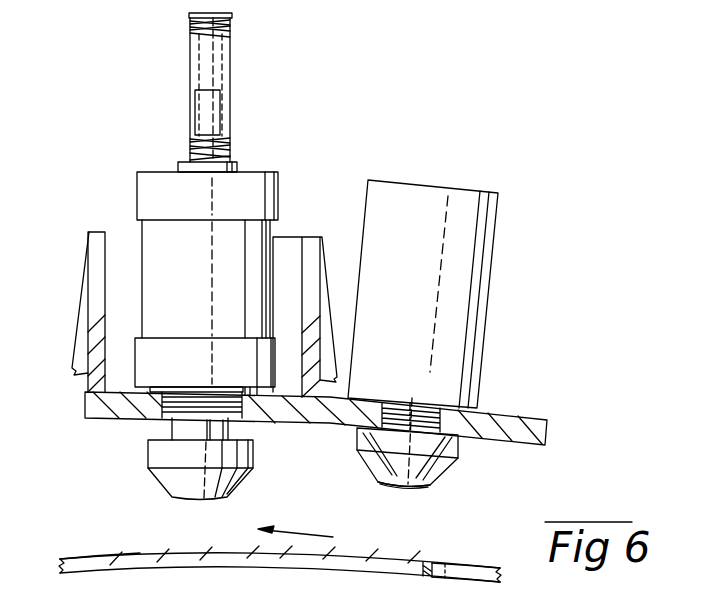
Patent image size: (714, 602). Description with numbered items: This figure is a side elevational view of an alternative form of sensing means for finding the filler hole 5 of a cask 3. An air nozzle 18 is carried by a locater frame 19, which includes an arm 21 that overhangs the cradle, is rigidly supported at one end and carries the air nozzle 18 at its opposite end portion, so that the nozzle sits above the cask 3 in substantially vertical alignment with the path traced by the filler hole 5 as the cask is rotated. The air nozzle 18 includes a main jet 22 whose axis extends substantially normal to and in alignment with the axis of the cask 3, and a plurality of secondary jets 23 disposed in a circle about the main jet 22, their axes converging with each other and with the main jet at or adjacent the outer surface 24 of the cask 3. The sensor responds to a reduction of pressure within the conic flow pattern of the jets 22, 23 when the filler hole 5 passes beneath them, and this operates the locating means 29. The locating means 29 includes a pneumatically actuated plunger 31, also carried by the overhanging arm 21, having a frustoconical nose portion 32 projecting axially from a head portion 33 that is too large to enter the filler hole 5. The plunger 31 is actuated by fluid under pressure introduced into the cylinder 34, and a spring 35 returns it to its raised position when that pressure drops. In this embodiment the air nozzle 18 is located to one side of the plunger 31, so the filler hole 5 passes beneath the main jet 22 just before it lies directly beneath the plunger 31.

The spring 35 is at (192, 22).
The locating means 29 is at (134, 258).
The cylinder 34 is at (240, 257).
The locater frame 19 is at (80, 325).
The arm 21 is at (95, 348).
The plunger 31 is at (185, 430).
The head portion 33 is at (168, 455).
The frustoconical nose portion 32 is at (180, 480).
The air nozzle 18 is at (453, 475).
The main jet 22 is at (378, 482).
The secondary jets 23 is at (403, 462).
The cask 3 is at (262, 560).
The outer surface 24 is at (85, 560).
The filler hole 5 is at (448, 568).